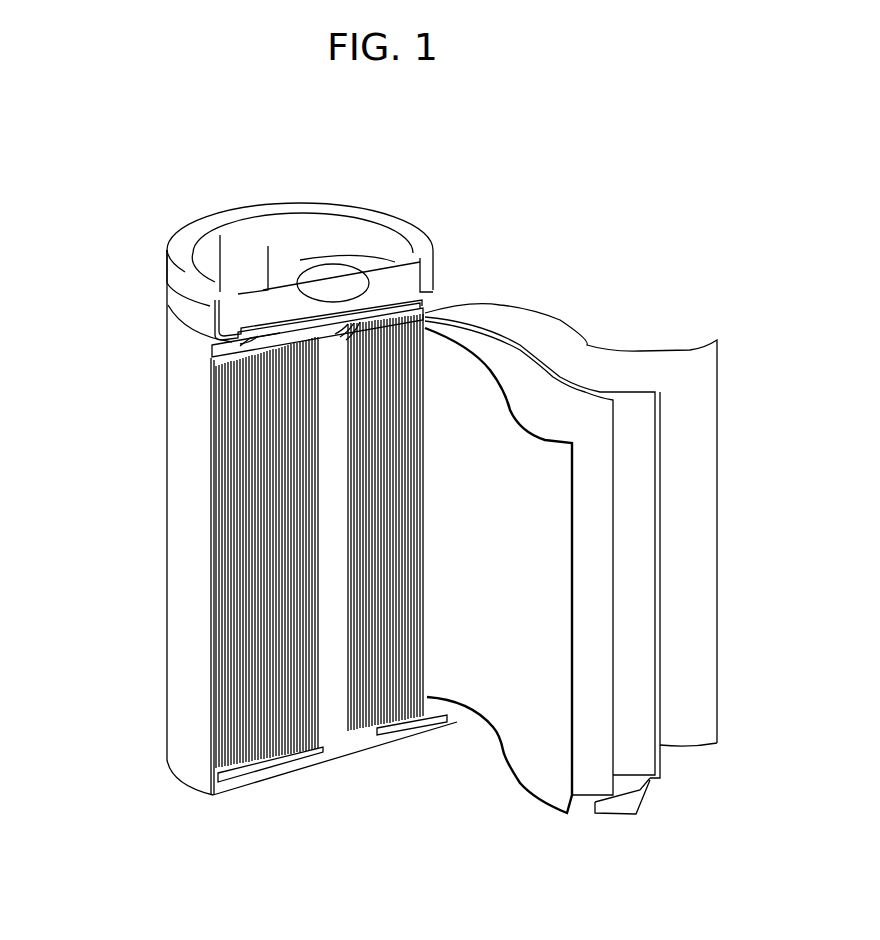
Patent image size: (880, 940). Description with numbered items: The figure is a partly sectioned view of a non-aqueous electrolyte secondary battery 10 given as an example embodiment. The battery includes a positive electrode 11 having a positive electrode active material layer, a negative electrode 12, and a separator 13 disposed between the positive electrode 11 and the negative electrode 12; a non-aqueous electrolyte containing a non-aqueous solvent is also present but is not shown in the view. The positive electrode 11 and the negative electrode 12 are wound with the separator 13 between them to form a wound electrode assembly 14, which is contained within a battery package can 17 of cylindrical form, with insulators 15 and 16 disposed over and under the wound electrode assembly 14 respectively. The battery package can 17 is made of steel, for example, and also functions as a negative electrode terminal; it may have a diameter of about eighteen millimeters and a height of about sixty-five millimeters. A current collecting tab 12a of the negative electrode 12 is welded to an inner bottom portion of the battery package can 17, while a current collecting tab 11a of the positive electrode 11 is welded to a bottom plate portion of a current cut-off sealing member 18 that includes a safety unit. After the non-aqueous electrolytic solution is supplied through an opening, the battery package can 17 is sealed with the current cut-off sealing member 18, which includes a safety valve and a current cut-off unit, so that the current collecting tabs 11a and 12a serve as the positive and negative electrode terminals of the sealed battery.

The non-aqueous electrolyte secondary battery 10 is at (452, 123).
The positive electrode 11 is at (548, 552).
The current collecting tab 11a is at (233, 333).
The negative electrode 12 is at (638, 662).
The current collecting tab 12a is at (640, 798).
The separator 13 is at (680, 368).
The wound electrode assembly 14 is at (212, 543).
The insulator 15 is at (215, 358).
The insulator 16 is at (262, 760).
The battery package can 17 is at (183, 615).
The current cut-off sealing member 18 is at (293, 212).